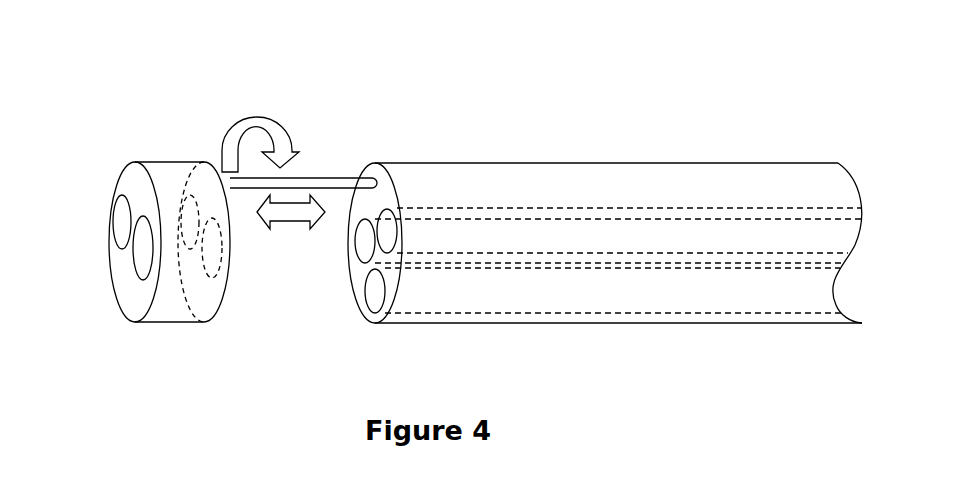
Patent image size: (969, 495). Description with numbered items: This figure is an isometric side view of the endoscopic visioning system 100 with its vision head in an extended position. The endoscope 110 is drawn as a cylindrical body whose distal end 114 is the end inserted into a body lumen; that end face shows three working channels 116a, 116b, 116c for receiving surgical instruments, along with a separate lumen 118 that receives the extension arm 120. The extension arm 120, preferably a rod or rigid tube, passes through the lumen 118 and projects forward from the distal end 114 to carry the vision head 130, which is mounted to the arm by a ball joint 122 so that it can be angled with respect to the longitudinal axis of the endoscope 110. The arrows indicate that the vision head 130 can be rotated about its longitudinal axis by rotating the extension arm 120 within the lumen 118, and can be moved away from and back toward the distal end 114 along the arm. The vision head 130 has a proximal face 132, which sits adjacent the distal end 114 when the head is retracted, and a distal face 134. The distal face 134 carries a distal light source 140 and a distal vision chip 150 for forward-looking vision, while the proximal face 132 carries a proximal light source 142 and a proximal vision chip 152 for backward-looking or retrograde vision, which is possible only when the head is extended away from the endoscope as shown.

The endoscopic visioning system 100 is at (748, 97).
The endoscope 110 is at (578, 163).
The distal end 114 is at (378, 162).
The working channel 116a is at (357, 262).
The working channel 116b is at (378, 253).
The working channel 116c is at (367, 305).
The lumen 118 is at (372, 176).
The extension arm 120 is at (323, 178).
The ball joint 122 is at (203, 162).
The vision head 130 is at (137, 162).
The proximal face 132 is at (237, 278).
The distal face 134 is at (110, 308).
The distal light source 140 is at (117, 193).
The proximal light source 142 is at (190, 250).
The distal vision chip 150 is at (132, 263).
The proximal vision chip 152 is at (212, 280).